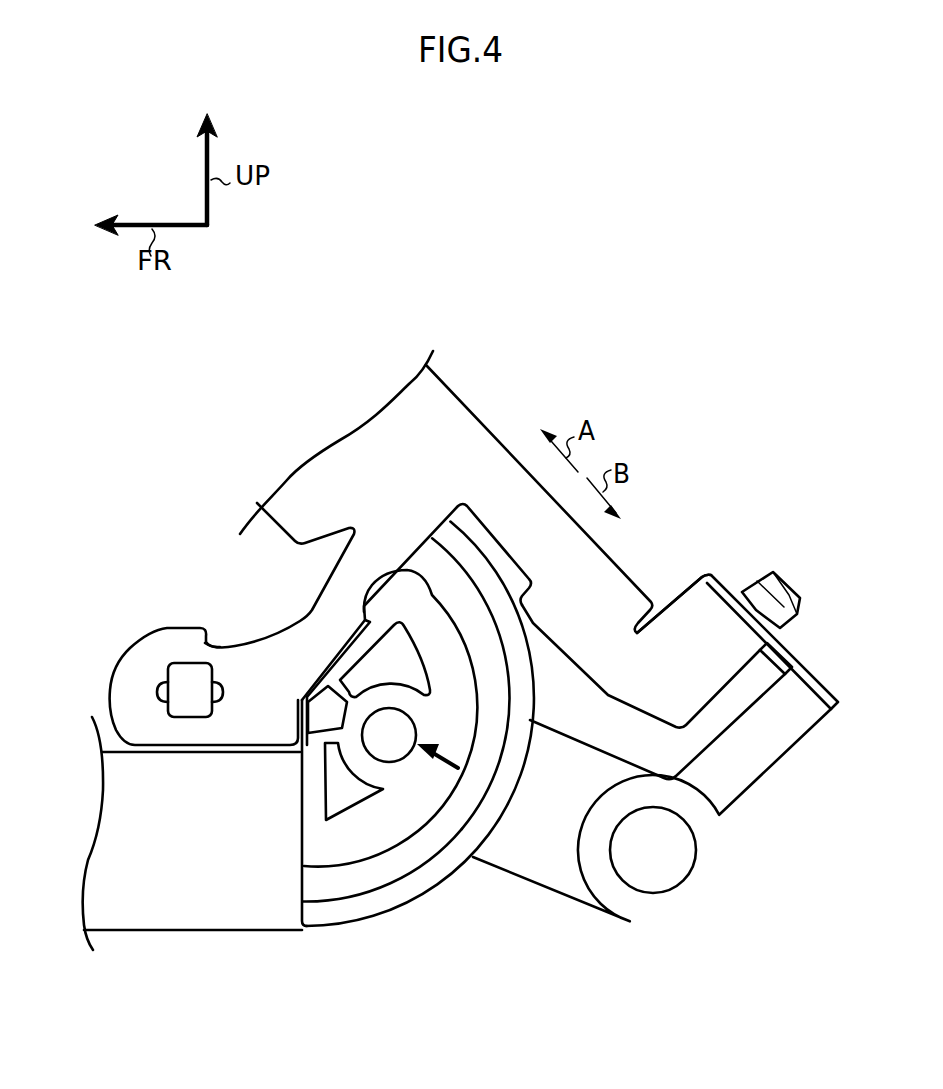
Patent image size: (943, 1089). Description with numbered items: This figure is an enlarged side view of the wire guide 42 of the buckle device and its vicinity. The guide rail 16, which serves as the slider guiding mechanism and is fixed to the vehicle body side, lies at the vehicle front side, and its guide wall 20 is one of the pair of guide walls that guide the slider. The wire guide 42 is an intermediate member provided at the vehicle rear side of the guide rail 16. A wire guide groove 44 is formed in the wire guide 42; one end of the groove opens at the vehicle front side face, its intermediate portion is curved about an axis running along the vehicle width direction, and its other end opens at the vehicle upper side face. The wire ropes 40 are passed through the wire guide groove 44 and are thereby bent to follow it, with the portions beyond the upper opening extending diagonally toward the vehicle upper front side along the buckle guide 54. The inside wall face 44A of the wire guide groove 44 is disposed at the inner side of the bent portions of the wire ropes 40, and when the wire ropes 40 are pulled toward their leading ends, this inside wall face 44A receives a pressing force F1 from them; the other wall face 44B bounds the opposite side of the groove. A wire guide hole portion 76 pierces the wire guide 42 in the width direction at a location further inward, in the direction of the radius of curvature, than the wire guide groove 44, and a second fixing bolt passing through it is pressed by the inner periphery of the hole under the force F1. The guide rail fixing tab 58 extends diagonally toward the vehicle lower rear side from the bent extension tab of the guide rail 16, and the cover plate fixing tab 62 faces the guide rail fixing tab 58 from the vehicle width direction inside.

The guide rail 16 is at (138, 931).
The guide wall 20 is at (182, 917).
The wire rope 40 is at (391, 749).
The wire guide 42 is at (379, 908).
The wire guide groove 44 is at (396, 764).
The inside wall face 44A is at (348, 868).
The second tooth portion 44B is at (401, 868).
The buckle guide 54 is at (447, 390).
The guide rail fixing tab 58 is at (655, 770).
The cover plate fixing tab 62 is at (647, 877).
The wire guide hole portion 76 is at (388, 752).
The pressing force F1 is at (460, 748).